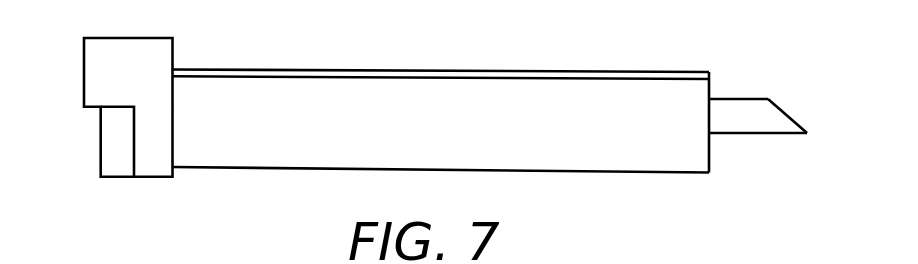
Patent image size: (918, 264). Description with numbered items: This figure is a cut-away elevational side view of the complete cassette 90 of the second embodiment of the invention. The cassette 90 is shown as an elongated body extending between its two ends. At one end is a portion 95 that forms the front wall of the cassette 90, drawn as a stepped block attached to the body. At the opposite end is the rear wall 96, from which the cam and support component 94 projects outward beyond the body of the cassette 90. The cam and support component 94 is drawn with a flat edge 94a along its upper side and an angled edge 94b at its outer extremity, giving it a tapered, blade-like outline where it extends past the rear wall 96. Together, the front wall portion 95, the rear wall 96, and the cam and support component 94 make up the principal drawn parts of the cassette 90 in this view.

The cassette 90 is at (348, 169).
The cam and support component 94 is at (789, 117).
The flat edge of blade tip 94a is at (728, 98).
The beveled edge of blade tip 94b is at (755, 136).
The portion forming the front wall 95 is at (84, 65).
The rear wall 96 is at (710, 153).